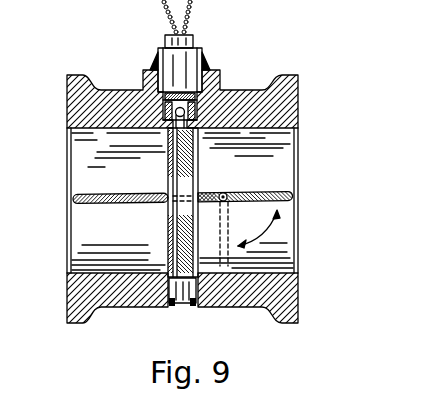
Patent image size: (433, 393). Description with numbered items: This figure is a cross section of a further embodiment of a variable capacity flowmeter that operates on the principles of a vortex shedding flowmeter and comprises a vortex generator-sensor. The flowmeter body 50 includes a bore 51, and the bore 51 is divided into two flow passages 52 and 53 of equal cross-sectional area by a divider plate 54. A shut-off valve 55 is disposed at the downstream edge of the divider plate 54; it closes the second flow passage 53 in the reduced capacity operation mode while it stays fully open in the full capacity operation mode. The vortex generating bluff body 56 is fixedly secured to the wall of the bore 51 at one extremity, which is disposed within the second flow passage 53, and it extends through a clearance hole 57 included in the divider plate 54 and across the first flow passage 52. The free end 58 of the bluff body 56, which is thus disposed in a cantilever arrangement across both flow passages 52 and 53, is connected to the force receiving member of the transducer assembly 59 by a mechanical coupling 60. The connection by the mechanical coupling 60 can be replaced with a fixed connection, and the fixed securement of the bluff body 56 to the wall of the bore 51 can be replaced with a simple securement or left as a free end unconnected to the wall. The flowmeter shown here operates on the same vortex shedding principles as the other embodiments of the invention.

The flowmeter body 50 is at (112, 98).
The bore 51 is at (77, 147).
The first flow passage 52 is at (102, 178).
The second flow passage 53 is at (100, 217).
The divider plate 54 is at (137, 202).
The shut-off valve 55 is at (262, 192).
The vortex generating bluff body 56 is at (170, 228).
The clearance hole 57 is at (205, 190).
The free end 58 is at (198, 147).
The transducer assembly 59 is at (178, 68).
The mechanical coupling 60 is at (168, 147).